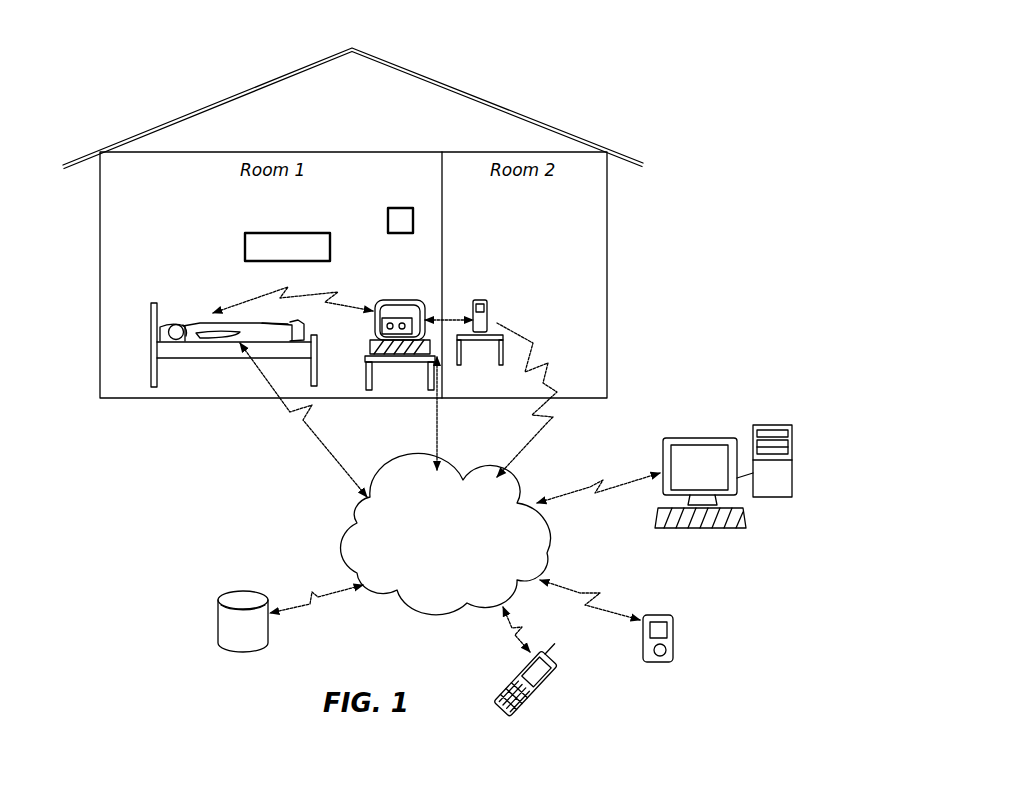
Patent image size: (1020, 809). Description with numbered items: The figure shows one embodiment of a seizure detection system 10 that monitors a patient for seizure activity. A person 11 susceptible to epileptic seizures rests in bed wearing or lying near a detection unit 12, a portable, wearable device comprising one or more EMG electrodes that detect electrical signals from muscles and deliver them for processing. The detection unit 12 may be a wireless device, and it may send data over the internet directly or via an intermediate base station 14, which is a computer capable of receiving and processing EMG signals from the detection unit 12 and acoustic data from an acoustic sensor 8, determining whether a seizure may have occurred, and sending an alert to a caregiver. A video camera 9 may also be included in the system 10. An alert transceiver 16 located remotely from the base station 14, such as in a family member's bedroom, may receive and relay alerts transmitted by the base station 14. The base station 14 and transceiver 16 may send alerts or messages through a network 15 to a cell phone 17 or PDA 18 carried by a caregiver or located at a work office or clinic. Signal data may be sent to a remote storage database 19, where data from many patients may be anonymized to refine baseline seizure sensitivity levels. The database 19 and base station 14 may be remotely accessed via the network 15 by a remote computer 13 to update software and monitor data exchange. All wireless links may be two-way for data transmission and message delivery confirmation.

The acoustic sensor 8 is at (388, 221).
The video camera 9 is at (255, 222).
The seizure detection system 10 is at (140, 580).
The person 11 is at (177, 290).
The detection unit 12 is at (187, 337).
The remote computer 13 is at (792, 453).
The base station 14 is at (400, 302).
The network 15 is at (464, 553).
The alert transceiver 16 is at (487, 306).
The cell phone 17 is at (540, 700).
The PDA 18 is at (675, 641).
The storage database 19 is at (218, 618).